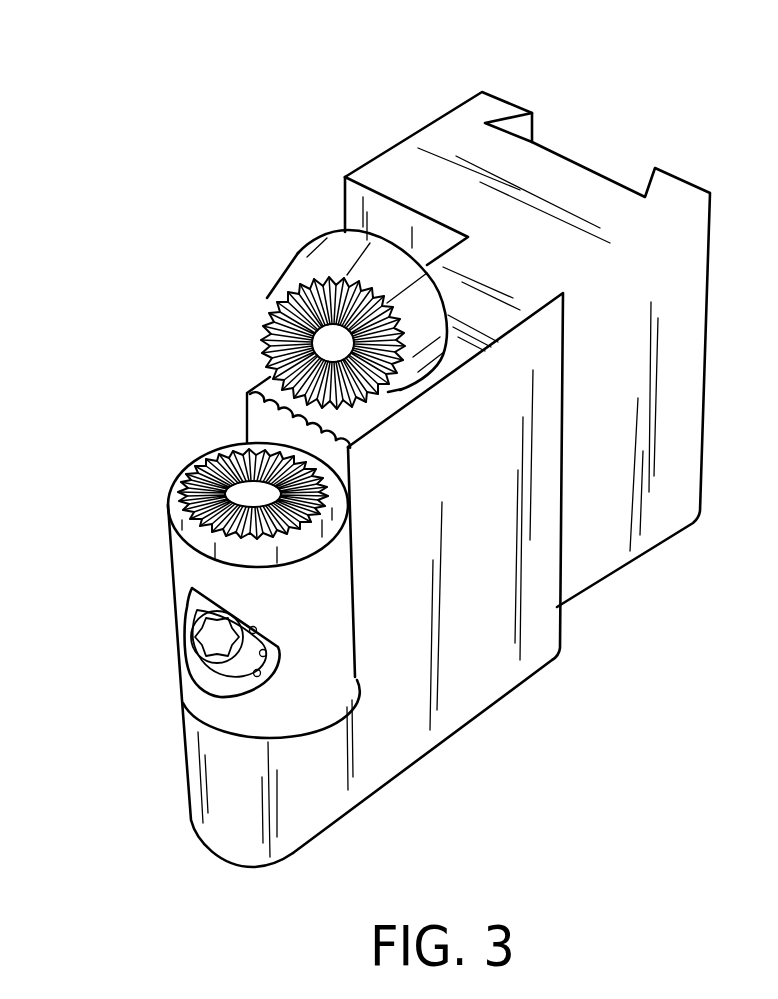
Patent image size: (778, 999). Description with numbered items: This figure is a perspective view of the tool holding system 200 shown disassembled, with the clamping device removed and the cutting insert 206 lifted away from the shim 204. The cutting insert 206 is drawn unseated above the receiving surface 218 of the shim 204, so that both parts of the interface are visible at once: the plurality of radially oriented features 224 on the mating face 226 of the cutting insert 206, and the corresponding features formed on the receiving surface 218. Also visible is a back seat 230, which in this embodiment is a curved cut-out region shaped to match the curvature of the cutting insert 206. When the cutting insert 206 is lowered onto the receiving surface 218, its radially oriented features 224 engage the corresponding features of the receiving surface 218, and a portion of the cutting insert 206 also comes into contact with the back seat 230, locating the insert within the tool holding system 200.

The tool holding system 200 is at (628, 112).
The shim 204 is at (187, 572).
The cutting insert 206 is at (297, 253).
The receiving surface 218 is at (192, 478).
The plurality of radially oriented features 224 is at (265, 312).
The mating face 226 is at (262, 360).
The back seat 230 is at (247, 417).